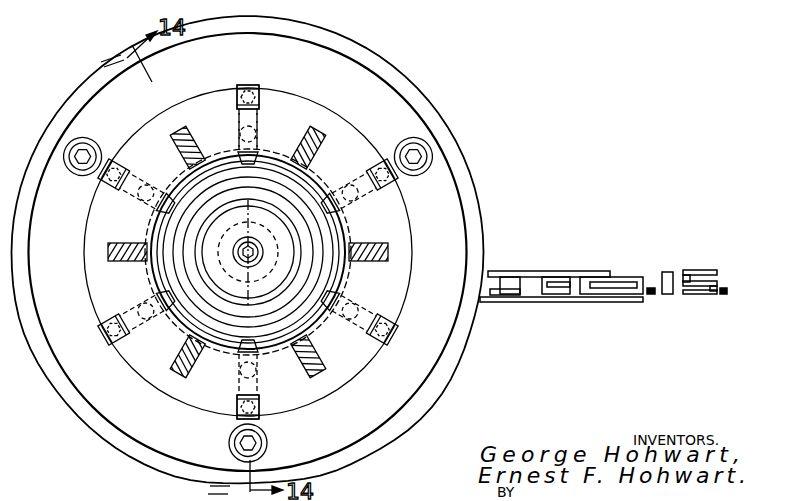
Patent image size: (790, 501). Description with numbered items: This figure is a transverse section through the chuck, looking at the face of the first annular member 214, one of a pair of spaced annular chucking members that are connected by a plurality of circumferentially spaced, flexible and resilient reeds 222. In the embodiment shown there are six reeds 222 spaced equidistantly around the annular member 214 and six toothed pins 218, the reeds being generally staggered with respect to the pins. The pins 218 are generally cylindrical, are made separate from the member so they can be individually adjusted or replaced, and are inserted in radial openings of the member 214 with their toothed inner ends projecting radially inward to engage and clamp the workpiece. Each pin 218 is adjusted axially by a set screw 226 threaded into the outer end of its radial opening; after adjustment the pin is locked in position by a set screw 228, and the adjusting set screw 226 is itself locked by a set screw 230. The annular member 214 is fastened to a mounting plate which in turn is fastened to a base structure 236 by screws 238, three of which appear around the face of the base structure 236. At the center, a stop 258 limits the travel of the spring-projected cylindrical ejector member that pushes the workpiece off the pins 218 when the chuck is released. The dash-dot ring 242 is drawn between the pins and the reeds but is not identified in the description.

The annular member 214 is at (287, 101).
The toothed pins 218 is at (258, 135).
The reeds 222 is at (182, 146).
The set screw 226 is at (256, 86).
The set screw 228 is at (237, 130).
The set screw 230 is at (240, 84).
The base structure 236 is at (472, 203).
The screws 238 is at (428, 153).
The ring 242 is at (380, 272).
The stop 258 is at (249, 251).